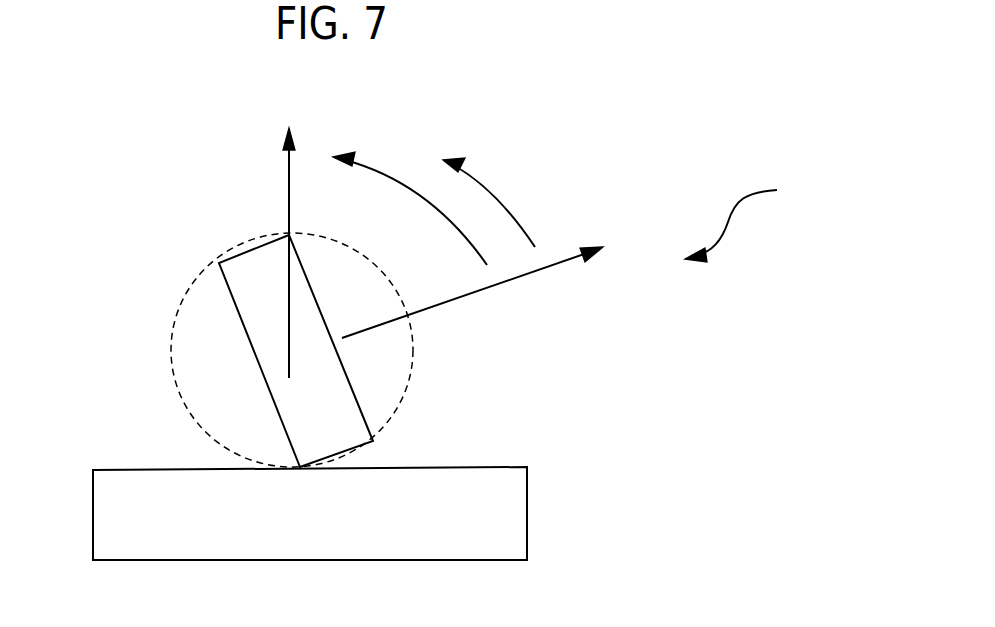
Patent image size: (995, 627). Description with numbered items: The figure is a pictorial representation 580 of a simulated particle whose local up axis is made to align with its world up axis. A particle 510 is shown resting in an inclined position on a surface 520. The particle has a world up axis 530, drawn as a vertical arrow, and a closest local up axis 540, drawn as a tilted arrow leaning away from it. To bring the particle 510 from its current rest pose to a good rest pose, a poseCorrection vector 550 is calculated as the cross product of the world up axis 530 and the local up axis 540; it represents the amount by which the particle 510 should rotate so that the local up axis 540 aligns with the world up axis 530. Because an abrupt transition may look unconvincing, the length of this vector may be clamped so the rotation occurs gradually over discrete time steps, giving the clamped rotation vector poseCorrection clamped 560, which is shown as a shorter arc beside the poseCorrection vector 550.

The particle 510 is at (355, 437).
The surface 520 is at (316, 533).
The world up axis 530 is at (324, 253).
The closest local up axis 540 is at (472, 294).
The poseCorrection vector 550 is at (392, 167).
The poseCorrection clamped vector 560 is at (512, 188).
The pictorial representation 580 is at (767, 220).